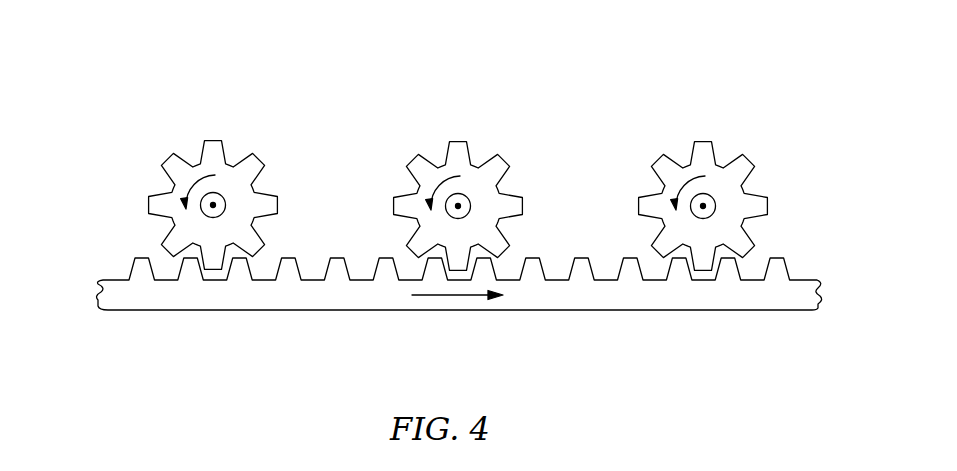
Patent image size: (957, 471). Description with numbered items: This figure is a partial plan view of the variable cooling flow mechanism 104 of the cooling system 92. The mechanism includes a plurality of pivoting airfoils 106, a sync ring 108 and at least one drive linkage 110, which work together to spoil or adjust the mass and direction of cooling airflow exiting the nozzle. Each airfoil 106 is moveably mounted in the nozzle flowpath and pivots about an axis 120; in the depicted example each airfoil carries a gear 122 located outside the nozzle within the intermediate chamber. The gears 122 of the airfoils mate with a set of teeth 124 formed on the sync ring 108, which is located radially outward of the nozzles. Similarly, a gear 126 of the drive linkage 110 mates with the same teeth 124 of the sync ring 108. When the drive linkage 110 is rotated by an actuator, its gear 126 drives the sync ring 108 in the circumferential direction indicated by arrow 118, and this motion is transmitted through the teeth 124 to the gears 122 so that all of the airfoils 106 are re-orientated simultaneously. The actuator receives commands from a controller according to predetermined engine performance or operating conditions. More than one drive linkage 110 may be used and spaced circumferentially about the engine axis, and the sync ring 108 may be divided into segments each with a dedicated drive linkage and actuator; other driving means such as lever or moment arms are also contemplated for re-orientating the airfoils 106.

The cooling system 92 is at (449, 213).
The variable cooling flow mechanism 104 is at (180, 128).
The pivoting airfoil 106 is at (228, 125).
The sync ring 108 is at (270, 300).
The drive linkage 110 is at (497, 143).
The circumferential direction arrow 118 is at (450, 300).
The axis 120 is at (214, 204).
The gear 122 is at (272, 193).
The teeth 124 is at (338, 258).
The gear 126 is at (518, 193).